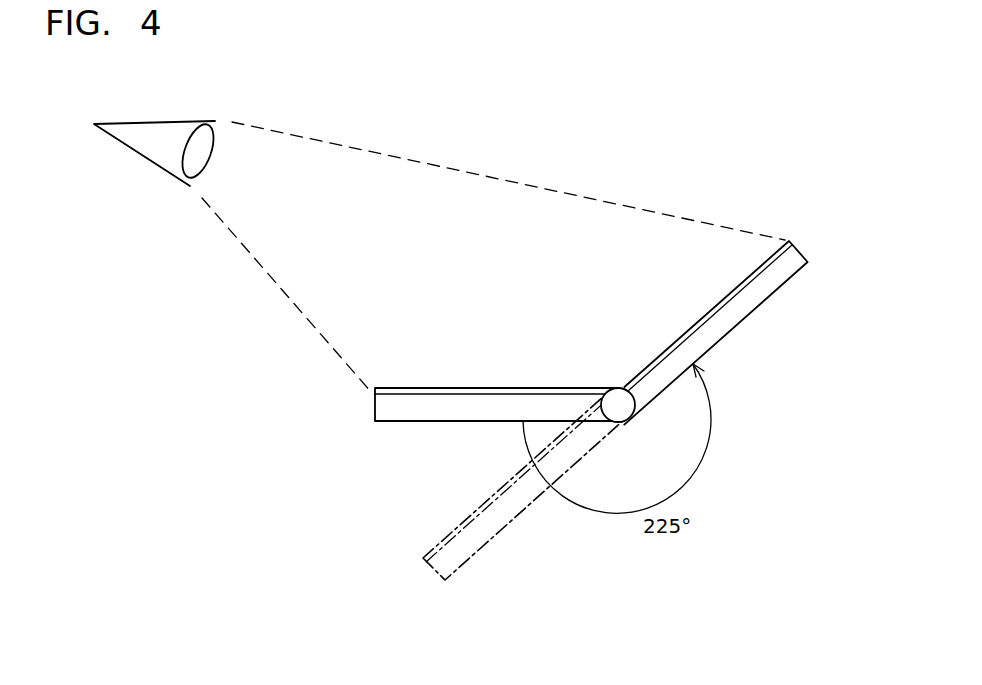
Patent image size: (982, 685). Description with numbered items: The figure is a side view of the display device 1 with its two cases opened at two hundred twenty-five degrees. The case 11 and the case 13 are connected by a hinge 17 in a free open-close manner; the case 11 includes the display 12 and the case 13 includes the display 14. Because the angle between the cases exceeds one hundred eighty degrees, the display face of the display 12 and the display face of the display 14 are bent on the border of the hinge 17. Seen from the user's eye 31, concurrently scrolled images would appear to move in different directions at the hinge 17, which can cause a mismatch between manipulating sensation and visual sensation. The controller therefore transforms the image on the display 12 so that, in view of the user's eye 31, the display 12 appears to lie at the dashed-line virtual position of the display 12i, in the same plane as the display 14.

The display device 1 is at (750, 428).
The case 11 is at (450, 421).
The display 12 is at (492, 388).
The virtual position of display 12i is at (450, 538).
The case 13 is at (741, 322).
The display 14 is at (702, 318).
The hinge 17 is at (623, 412).
The user's eye 31 is at (181, 192).